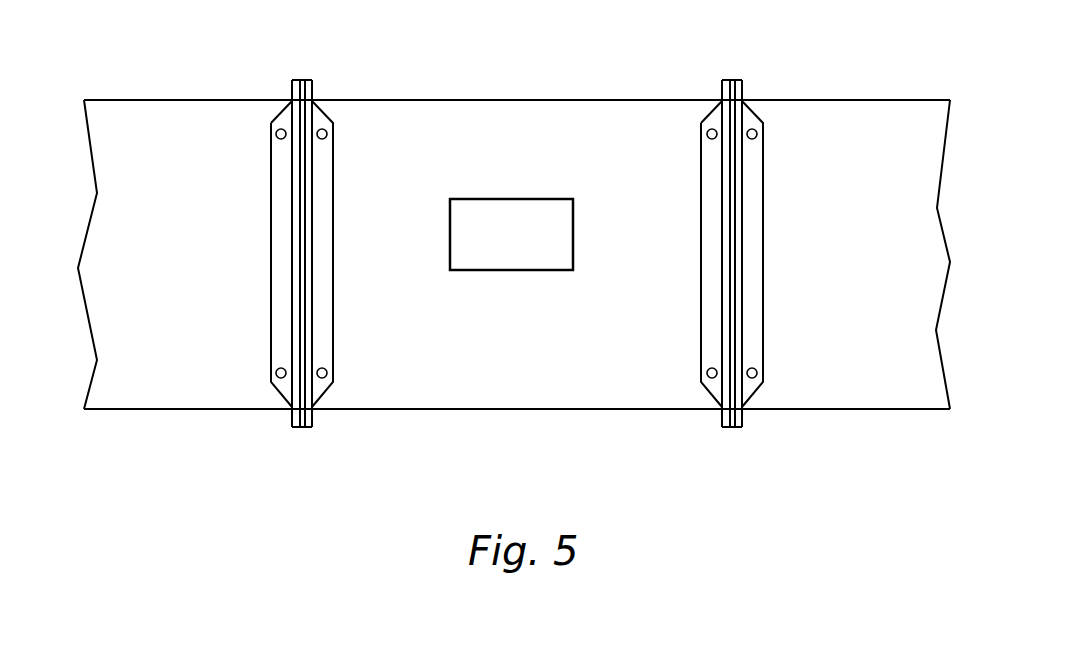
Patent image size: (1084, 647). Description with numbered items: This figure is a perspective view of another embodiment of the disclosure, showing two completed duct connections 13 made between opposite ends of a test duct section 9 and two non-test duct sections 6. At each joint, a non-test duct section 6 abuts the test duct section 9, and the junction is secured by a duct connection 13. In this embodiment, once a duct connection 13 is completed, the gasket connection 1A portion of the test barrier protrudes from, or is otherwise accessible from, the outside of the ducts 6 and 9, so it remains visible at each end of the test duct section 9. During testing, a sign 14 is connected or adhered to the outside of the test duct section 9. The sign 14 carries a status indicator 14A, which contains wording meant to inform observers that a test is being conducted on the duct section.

The non-test duct section 6 is at (184, 99).
The test duct section 9 is at (506, 99).
The gasket connection 1A is at (300, 80).
The duct connection 13 is at (292, 313).
The sign 14 is at (553, 270).
The status indicator 14A is at (460, 270).